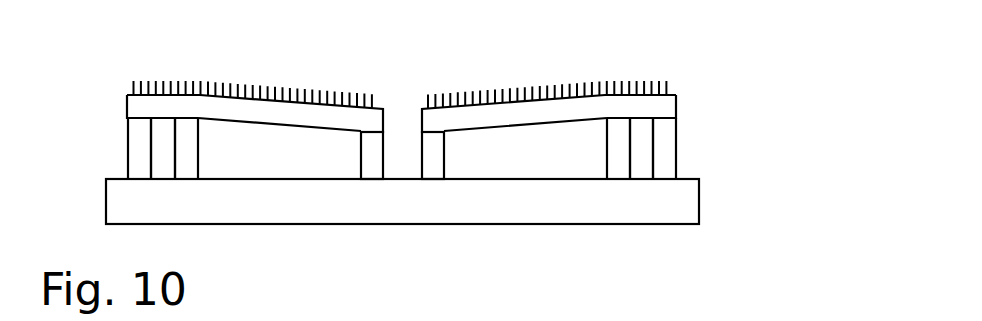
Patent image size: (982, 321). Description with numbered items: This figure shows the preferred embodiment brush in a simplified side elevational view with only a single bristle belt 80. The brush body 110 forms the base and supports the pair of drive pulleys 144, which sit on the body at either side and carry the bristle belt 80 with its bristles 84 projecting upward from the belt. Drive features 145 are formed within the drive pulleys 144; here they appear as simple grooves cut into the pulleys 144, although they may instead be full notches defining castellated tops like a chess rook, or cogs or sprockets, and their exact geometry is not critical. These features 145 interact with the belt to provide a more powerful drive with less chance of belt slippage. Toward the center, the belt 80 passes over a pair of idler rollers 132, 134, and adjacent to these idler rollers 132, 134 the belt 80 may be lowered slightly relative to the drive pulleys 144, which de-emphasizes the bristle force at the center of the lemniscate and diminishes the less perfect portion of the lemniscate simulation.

The bristle belt 80 is at (135, 108).
The bristles 84 is at (230, 90).
The brush body 110 is at (418, 214).
The idler roller 132 is at (373, 150).
The idler roller 134 is at (430, 150).
The drive pulley 144 is at (135, 144).
The drive feature 145 is at (160, 158).